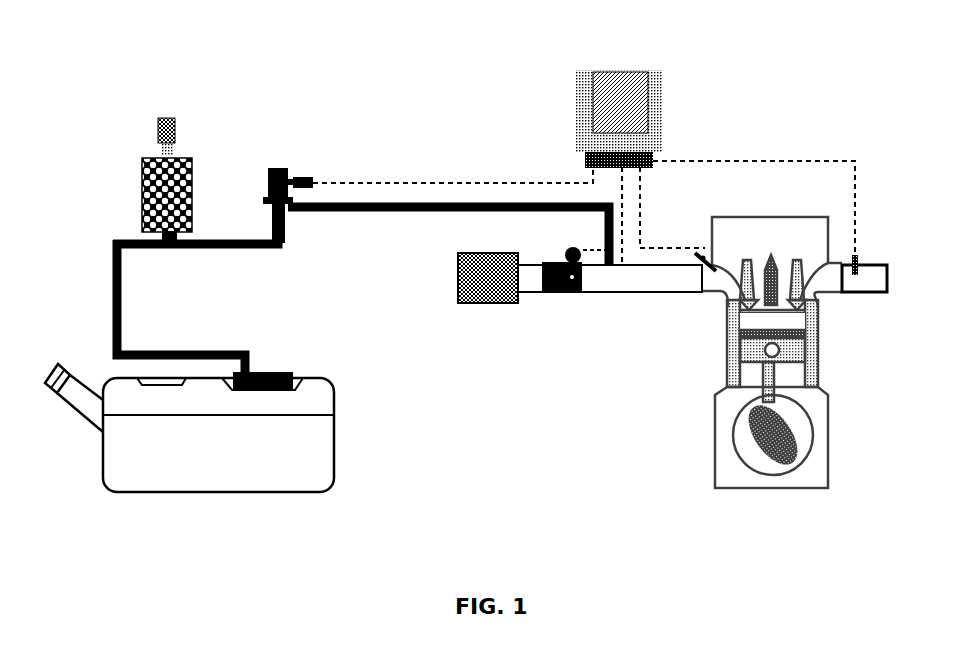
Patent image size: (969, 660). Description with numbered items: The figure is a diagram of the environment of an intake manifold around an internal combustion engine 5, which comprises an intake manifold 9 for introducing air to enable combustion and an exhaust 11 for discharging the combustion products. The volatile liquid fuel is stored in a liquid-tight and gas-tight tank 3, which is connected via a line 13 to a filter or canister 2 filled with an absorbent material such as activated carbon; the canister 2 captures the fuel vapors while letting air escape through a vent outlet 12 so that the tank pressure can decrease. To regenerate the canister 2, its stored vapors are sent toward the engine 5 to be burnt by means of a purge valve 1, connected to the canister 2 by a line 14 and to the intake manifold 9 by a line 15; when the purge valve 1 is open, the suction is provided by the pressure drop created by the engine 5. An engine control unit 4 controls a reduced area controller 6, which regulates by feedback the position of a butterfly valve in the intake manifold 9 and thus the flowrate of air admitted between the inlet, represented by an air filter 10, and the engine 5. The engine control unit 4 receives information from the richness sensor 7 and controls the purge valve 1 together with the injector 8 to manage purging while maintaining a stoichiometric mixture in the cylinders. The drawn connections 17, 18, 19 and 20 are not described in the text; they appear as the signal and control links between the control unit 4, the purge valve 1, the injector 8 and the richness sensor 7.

The purge valve 1 is at (256, 174).
The canister 2 is at (132, 175).
The tank 3 is at (227, 428).
The engine control unit 4 is at (594, 141).
The internal combustion engine 5 is at (741, 352).
The reduced area controller 6 is at (539, 316).
The richness sensor 7 is at (887, 239).
The injector 8 is at (742, 233).
The intake manifold 9 is at (610, 311).
The air filter 10 is at (458, 310).
The exhaust 11 is at (879, 322).
The vent outlet 12 is at (125, 104).
The line 13 is at (187, 308).
The line 14 is at (233, 264).
The line 15 is at (448, 245).
The valve control line 17 is at (453, 150).
The injector sensor 18 is at (566, 244).
The sensor signal line 19 is at (766, 184).
The throttle control line 20 is at (688, 207).